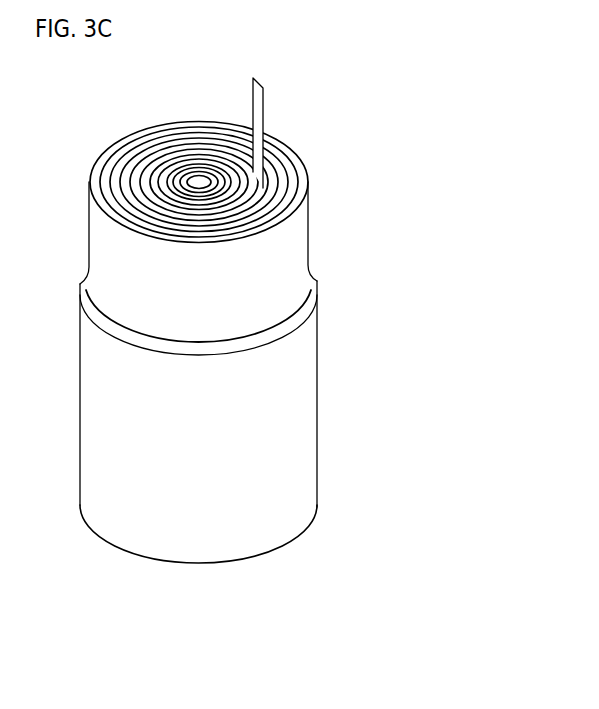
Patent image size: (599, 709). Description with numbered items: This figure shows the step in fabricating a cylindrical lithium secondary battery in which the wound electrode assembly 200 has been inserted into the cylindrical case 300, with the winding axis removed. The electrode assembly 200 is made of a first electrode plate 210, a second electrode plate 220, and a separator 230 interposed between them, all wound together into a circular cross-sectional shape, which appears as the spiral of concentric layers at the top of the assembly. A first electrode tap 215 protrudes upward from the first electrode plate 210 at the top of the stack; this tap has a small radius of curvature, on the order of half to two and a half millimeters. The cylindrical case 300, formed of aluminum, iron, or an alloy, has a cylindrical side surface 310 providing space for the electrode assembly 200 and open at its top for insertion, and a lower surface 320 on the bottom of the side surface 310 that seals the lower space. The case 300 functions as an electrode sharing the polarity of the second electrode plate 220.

The electrode assembly 200 is at (430, 158).
The first electrode plate 210 is at (279, 168).
The first electrode tap 215 is at (257, 100).
The second electrode plate 220 is at (291, 178).
The separator 230 is at (299, 202).
The cylindrical case 300 is at (355, 396).
The cylindrical side surface 310 is at (306, 344).
The lower surface 320 is at (257, 557).